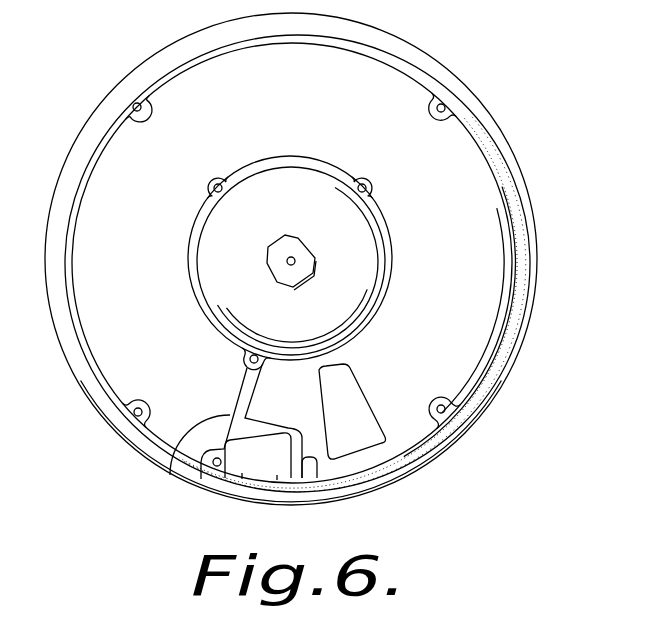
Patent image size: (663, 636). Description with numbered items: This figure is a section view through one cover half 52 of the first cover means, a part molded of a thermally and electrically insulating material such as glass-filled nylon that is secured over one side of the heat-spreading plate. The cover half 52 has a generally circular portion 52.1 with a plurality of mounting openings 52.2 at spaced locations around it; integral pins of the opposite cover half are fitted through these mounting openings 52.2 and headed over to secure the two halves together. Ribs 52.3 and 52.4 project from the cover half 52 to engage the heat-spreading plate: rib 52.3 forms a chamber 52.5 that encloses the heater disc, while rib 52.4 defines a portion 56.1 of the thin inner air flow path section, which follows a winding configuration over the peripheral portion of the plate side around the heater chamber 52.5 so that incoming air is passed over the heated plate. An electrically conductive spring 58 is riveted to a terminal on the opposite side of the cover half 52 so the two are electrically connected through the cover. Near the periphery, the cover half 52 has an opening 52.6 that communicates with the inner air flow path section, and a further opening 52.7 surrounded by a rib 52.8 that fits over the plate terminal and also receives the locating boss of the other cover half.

The cover half 52 is at (515, 152).
The circular portion 52.1 is at (531, 221).
The mounting openings 52.2 is at (135, 103).
The rib 52.3 is at (385, 286).
The rib 52.4 is at (480, 385).
The chamber 52.5 is at (340, 318).
The opening 52.6 is at (352, 451).
The opening 52.7 is at (257, 481).
The rib 52.8 is at (313, 479).
The portion of the thin inner air flow path section 56.1 is at (150, 277).
The electrically conductive spring 58 is at (276, 278).